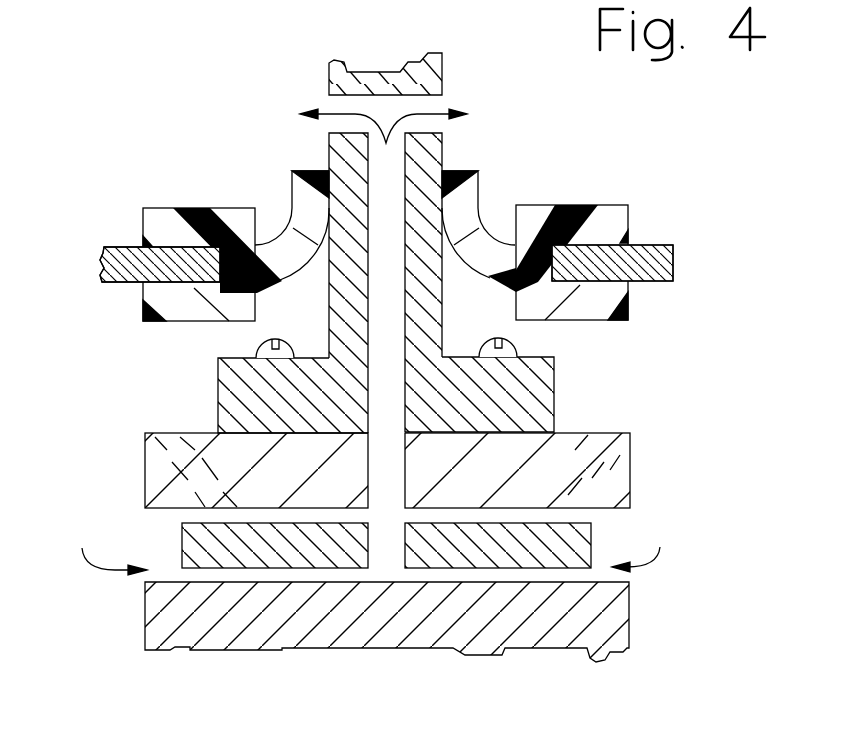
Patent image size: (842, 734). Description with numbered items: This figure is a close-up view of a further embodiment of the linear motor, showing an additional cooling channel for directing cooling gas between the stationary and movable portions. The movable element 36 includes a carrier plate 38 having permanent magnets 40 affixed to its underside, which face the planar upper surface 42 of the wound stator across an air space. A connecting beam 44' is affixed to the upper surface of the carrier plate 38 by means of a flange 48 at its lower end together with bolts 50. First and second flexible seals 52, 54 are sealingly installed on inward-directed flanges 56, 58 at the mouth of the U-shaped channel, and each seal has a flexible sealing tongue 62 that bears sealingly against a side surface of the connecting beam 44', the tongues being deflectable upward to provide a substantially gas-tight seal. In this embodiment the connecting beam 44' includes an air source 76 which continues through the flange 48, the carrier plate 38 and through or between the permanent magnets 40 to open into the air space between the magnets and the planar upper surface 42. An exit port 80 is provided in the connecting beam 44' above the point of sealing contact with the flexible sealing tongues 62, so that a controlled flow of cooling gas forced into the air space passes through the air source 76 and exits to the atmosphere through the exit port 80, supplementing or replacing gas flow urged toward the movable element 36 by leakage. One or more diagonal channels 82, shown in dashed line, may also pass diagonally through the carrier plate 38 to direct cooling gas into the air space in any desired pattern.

The movable element 36 is at (687, 367).
The carrier plate 38 is at (630, 467).
The permanent magnets 40 is at (591, 545).
The planar upper surface 42 is at (170, 585).
The connecting beam 44' is at (436, 266).
The flange 48 is at (554, 392).
The bolts 50 is at (513, 339).
The first flexible seal 52 is at (558, 224).
The second flexible seal 54 is at (166, 220).
The inward-directed flange 56 is at (654, 245).
The inward-directed flange 58 is at (122, 252).
The flexible sealing tongue 62 is at (472, 205).
The air source 76 is at (390, 312).
The exit port 80 is at (327, 112).
The diagonal channels 82 is at (165, 437).